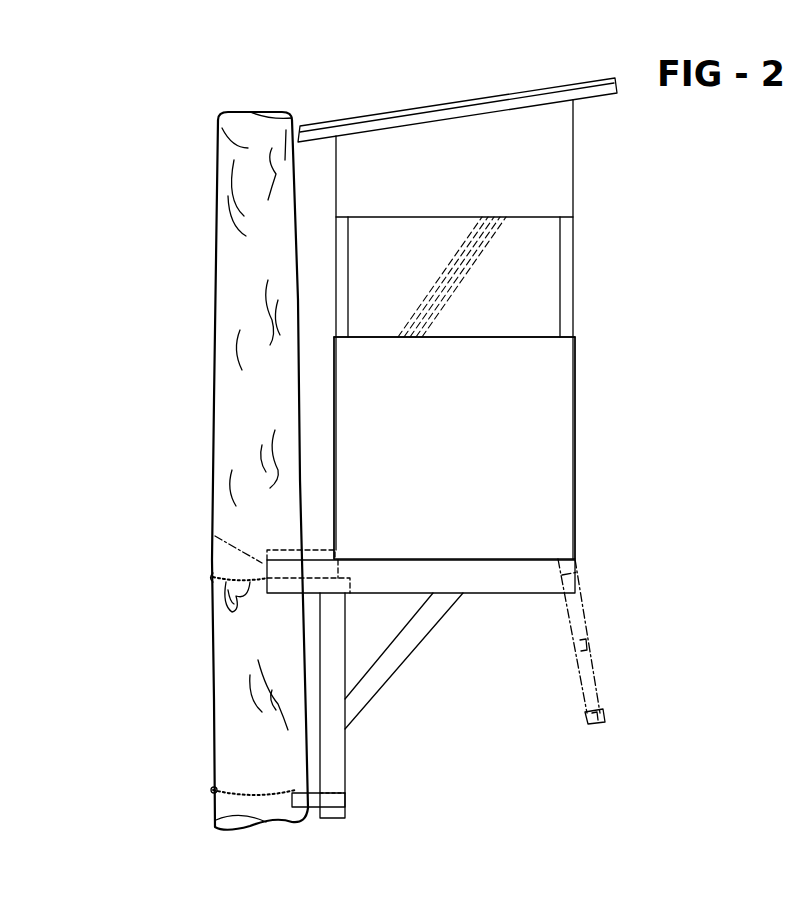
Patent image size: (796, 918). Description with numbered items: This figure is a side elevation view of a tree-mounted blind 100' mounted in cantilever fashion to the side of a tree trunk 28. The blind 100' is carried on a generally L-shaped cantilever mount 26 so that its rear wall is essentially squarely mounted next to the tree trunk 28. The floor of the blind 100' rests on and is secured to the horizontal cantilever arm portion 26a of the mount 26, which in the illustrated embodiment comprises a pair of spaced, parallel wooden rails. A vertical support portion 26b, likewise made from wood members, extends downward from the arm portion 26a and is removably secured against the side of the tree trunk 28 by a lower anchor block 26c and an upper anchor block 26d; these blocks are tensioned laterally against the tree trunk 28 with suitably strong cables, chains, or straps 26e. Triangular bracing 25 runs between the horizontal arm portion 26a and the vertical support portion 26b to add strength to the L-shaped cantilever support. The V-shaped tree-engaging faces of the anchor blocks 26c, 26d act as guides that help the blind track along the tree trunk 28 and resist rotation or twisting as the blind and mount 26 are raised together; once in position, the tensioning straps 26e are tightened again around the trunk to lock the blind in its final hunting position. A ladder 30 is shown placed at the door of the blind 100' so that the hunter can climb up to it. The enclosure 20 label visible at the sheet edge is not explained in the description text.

The tree trunk 28 is at (220, 130).
The tree-mounted blind 100' is at (507, 318).
The blind enclosure 20 is at (565, 445).
The cantilever mount 26 is at (355, 670).
The horizontal cantilever arm portion 26a is at (498, 587).
The vertical support portion 26b is at (327, 708).
The lower anchor block 26c is at (310, 798).
The upper anchor block 26d is at (215, 536).
The straps 26e is at (212, 597).
The triangular bracing 25 is at (405, 640).
The ladder 30 is at (590, 648).